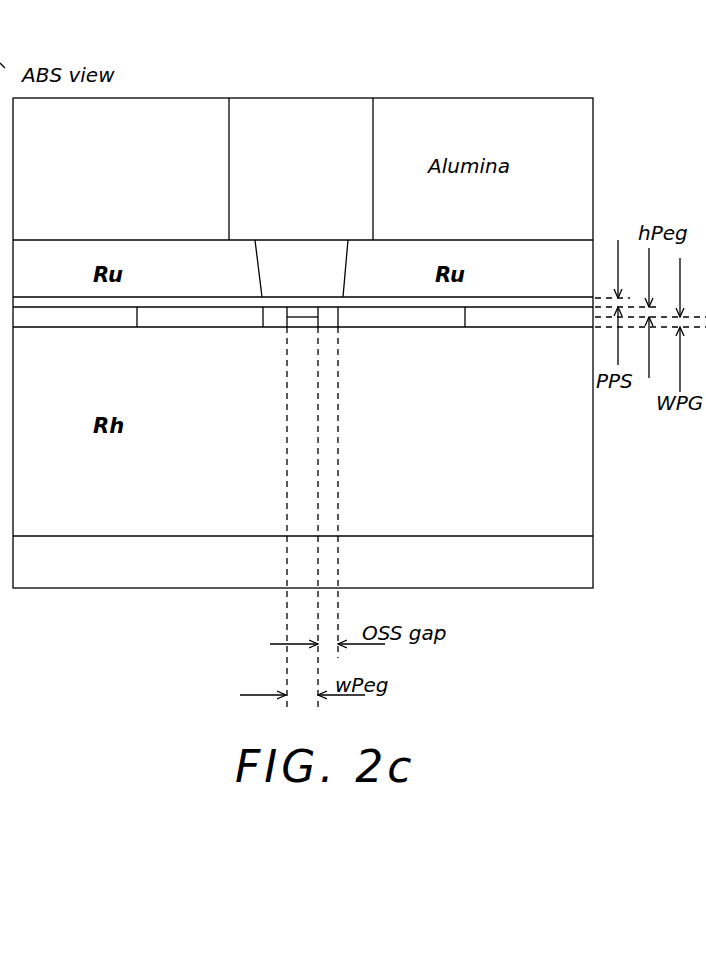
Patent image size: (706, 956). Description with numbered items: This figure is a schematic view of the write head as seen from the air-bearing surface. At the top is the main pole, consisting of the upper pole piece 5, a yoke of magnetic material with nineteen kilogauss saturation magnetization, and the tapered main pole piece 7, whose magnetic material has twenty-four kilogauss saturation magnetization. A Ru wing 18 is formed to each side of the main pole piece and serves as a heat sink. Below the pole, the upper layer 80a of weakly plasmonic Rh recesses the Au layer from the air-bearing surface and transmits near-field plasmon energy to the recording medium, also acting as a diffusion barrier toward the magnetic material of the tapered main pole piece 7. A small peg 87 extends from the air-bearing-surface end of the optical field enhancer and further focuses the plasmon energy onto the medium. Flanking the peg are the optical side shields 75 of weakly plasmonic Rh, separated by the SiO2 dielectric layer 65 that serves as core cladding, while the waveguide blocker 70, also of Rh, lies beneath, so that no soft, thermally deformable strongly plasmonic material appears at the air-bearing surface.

The upper pole piece 5 is at (278, 110).
The tapered main pole piece 7 is at (335, 255).
The Ru wing 18 is at (563, 258).
The dielectric layer 65 is at (35, 327).
The waveguide blocker 70 is at (575, 501).
The optical side shield 75 is at (168, 327).
The upper layer 80a is at (190, 305).
The peg 87 is at (293, 312).